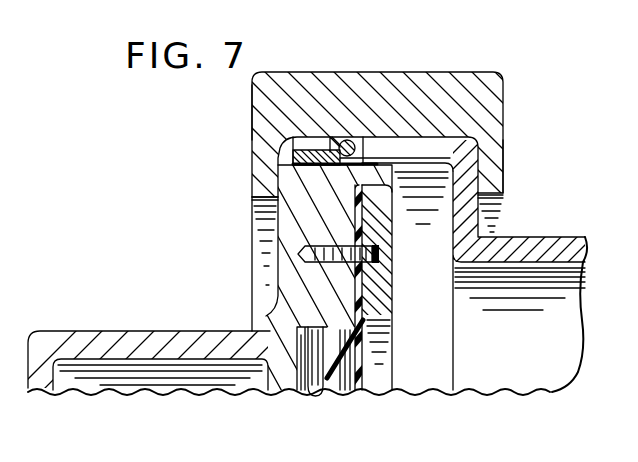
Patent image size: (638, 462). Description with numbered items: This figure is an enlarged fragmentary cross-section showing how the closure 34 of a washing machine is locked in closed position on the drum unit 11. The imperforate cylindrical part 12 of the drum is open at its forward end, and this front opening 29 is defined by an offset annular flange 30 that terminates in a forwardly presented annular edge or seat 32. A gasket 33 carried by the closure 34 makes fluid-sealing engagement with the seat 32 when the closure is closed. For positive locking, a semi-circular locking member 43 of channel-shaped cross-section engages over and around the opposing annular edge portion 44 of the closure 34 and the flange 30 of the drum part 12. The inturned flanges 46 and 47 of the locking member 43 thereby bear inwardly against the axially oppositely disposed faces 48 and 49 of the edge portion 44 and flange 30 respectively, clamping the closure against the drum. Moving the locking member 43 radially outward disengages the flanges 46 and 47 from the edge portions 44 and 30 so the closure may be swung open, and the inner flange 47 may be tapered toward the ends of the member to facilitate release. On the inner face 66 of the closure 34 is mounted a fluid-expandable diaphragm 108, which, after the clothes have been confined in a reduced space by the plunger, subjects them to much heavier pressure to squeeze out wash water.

The clothes-containing drum unit 11 is at (581, 238).
The imperforate cylindrical part 12 is at (552, 240).
The front opening 29 is at (514, 250).
The offset annular flange 30 is at (500, 80).
The annular edge or seat 32 is at (365, 148).
The gasket 33 is at (352, 140).
The closure 34 is at (277, 267).
The locking member 43 is at (252, 104).
The annular edge portion of closure 44 is at (311, 140).
The inturned flange 46 is at (253, 184).
The inner inturned flange 47 is at (504, 160).
The face of closure edge portion 48 is at (277, 240).
The face of drum flange 49 is at (481, 204).
The inner face of closure 66 is at (368, 298).
The fluid-expandable diaphragm 108 is at (333, 383).